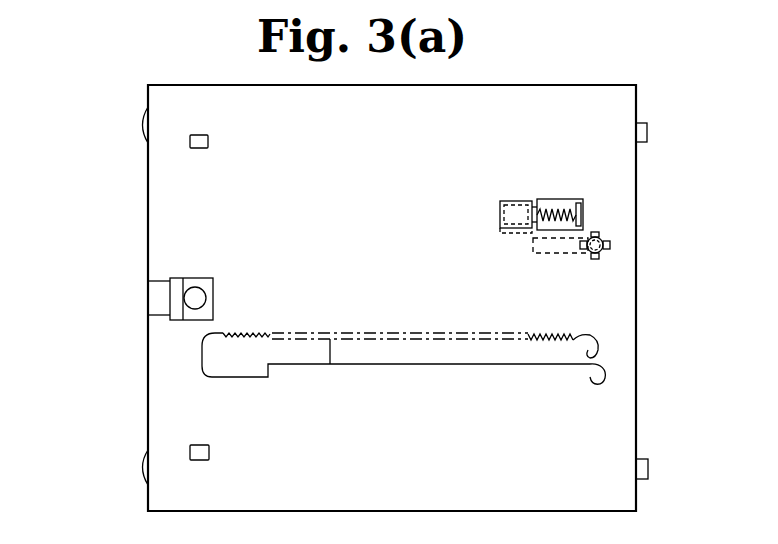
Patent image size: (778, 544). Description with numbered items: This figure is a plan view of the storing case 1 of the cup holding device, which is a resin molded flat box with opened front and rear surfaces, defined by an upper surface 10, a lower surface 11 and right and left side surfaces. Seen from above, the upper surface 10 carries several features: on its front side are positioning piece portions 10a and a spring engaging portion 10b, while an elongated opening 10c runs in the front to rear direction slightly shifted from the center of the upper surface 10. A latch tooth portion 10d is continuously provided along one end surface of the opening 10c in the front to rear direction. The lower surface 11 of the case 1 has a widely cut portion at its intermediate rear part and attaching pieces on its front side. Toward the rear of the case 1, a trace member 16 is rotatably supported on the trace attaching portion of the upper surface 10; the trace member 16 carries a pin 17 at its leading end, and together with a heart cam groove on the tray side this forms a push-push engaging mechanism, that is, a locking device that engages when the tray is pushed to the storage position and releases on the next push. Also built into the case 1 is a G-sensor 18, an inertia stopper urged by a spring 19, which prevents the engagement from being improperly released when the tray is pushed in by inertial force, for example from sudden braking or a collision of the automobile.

The storing case 1 is at (136, 84).
The upper surface 10 is at (608, 430).
The positioning piece portions 10a is at (190, 143).
The spring engaging portion 10b is at (190, 318).
The elongated opening 10c is at (600, 380).
The latch tooth portion 10d is at (595, 347).
The lower surface 11 is at (222, 357).
The trace member 16 is at (602, 240).
The pin 17 is at (545, 250).
The G-sensor 18 is at (519, 200).
The spring 19 is at (567, 205).